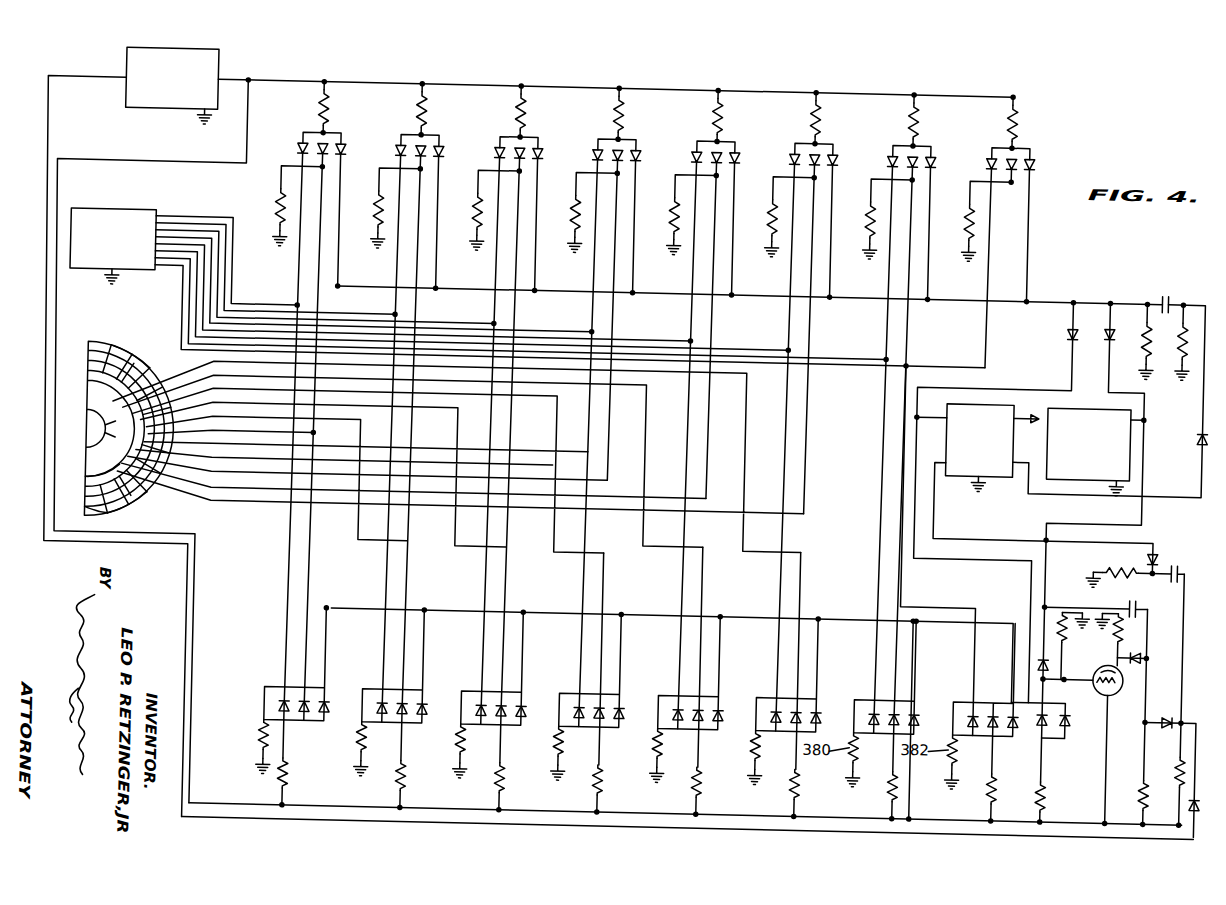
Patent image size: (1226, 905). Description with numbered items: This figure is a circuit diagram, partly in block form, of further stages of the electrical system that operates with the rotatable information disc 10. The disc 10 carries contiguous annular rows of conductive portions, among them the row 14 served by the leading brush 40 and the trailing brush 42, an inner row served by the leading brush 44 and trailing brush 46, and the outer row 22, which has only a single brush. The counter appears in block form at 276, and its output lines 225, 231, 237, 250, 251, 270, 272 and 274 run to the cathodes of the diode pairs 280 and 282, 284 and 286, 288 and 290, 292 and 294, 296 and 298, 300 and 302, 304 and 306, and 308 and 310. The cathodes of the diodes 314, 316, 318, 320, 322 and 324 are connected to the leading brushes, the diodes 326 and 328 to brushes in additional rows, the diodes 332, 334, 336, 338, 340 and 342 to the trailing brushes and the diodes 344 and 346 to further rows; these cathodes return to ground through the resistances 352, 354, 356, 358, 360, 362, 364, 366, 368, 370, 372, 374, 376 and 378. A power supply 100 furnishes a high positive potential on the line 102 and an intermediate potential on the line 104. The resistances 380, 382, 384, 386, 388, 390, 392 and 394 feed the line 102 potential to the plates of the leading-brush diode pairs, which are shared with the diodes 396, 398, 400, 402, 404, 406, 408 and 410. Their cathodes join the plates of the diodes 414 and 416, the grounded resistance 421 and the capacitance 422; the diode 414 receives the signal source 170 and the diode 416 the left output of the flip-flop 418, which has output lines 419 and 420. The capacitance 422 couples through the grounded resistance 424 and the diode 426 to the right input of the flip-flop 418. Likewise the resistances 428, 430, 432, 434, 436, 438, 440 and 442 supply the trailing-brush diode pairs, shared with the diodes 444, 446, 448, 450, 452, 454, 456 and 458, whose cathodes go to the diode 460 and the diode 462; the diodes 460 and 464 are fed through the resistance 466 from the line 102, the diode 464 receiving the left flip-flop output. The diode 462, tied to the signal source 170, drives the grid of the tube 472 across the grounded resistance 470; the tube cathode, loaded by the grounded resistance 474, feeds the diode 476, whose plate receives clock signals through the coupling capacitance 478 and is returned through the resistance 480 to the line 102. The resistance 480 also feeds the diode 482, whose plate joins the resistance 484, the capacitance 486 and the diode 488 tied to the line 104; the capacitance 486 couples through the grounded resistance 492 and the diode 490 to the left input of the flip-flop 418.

The disc 10 is at (92, 520).
The annular row 14 is at (90, 382).
The annular row 22 is at (110, 512).
The brush 40 is at (128, 476).
The brush 42 is at (135, 392).
The brush 44 is at (122, 486).
The brush 46 is at (118, 380).
The power supply 100 is at (166, 120).
The line 102 is at (380, 86).
The line 104 is at (1038, 828).
The signal source 170 is at (1086, 396).
The pulse counter output line 225 is at (254, 308).
The output line 231 is at (370, 315).
The output line 237 is at (467, 320).
The output line 250 is at (564, 326).
The output line 251 is at (646, 334).
The output line 270 is at (744, 340).
The output line 272 is at (839, 346).
The output line 274 is at (936, 356).
The counter 276 is at (105, 220).
The diode 280 is at (291, 155).
The diode 282 is at (285, 712).
The diode 284 is at (390, 153).
The diode 286 is at (383, 711).
The diode 288 is at (489, 154).
The diode 290 is at (482, 711).
The diode 292 is at (587, 153).
The diode 294 is at (580, 711).
The diode 296 is at (686, 152).
The diode 298 is at (679, 711).
The diode 300 is at (784, 152).
The diode 302 is at (777, 711).
The diode 304 is at (882, 152).
The diode 306 is at (875, 711).
The diode 308 is at (981, 151).
The diode 310 is at (974, 711).
The diode 314 is at (309, 150).
The diode 316 is at (408, 150).
The diode 318 is at (511, 149).
The diode 320 is at (608, 149).
The diode 322 is at (707, 149).
The diode 324 is at (805, 149).
The diode 326 is at (903, 149).
The diode 328 is at (1002, 149).
The diode 332 is at (312, 722).
The diode 334 is at (410, 722).
The diode 336 is at (509, 722).
The diode 338 is at (607, 722).
The diode 340 is at (706, 722).
The diode 342 is at (804, 721).
The diode 344 is at (902, 719).
The diode 346 is at (1010, 719).
The grounded resistance 352 is at (269, 218).
The grounded resistance 354 is at (367, 218).
The grounded resistance 356 is at (466, 218).
The grounded resistance 358 is at (564, 216).
The grounded resistance 360 is at (663, 216).
The grounded resistance 362 is at (761, 216).
The grounded resistance 364 is at (859, 214).
The grounded resistance 366 is at (958, 214).
The grounded resistance 368 is at (266, 745).
The grounded resistance 370 is at (364, 748).
The grounded resistance 372 is at (463, 746).
The grounded resistance 374 is at (561, 745).
The grounded resistance 376 is at (660, 743).
The grounded resistance 378 is at (758, 742).
The resistance 380 is at (311, 108).
The resistance 382 is at (409, 106).
The resistance 384 is at (508, 105).
The resistance 386 is at (606, 104).
The resistance 388 is at (705, 104).
The resistance 390 is at (803, 104).
The resistance 392 is at (901, 103).
The resistance 394 is at (1000, 104).
The diode 396 is at (350, 160).
The diode 398 is at (436, 155).
The diode 400 is at (535, 154).
The diode 402 is at (633, 154).
The diode 404 is at (732, 154).
The diode 406 is at (830, 154).
The diode 408 is at (928, 154).
The diode 410 is at (1028, 155).
The diode 414 is at (1106, 317).
The diode 416 is at (1064, 324).
The flip-flop 418 is at (996, 392).
The output line 419 is at (924, 413).
The output line 420 is at (1020, 412).
The grounded resistance 421 is at (1140, 326).
The capacitance 422 is at (1161, 283).
The grounded resistance 424 is at (1182, 306).
The diode 426 is at (1196, 428).
The resistance 428 is at (286, 790).
The resistance 430 is at (404, 788).
The resistance 432 is at (503, 787).
The resistance 434 is at (601, 785).
The resistance 436 is at (700, 783).
The resistance 438 is at (798, 781).
The resistance 440 is at (896, 779).
The resistance 442 is at (995, 779).
The diode 444 is at (334, 708).
The diode 446 is at (432, 708).
The diode 448 is at (531, 708).
The diode 450 is at (629, 708).
The diode 452 is at (728, 708).
The diode 454 is at (826, 708).
The diode 456 is at (924, 708).
The diode 458 is at (1016, 708).
The diode 460 is at (1052, 722).
The diode 462 is at (1054, 655).
The diode 464 is at (1073, 714).
The resistance 466 is at (1052, 780).
The grounded resistance 470 is at (1070, 610).
The tube 472 is at (1124, 676).
The grounded resistance 474 is at (1128, 628).
The diode 476 is at (1146, 650).
The coupling capacitance 478 is at (1136, 595).
The resistance 480 is at (1148, 785).
The diode 482 is at (1172, 704).
The resistance 484 is at (1183, 752).
The capacitance 486 is at (1178, 552).
The diode 488 is at (1196, 800).
The diode 490 is at (1160, 540).
The grounded resistance 492 is at (1125, 556).